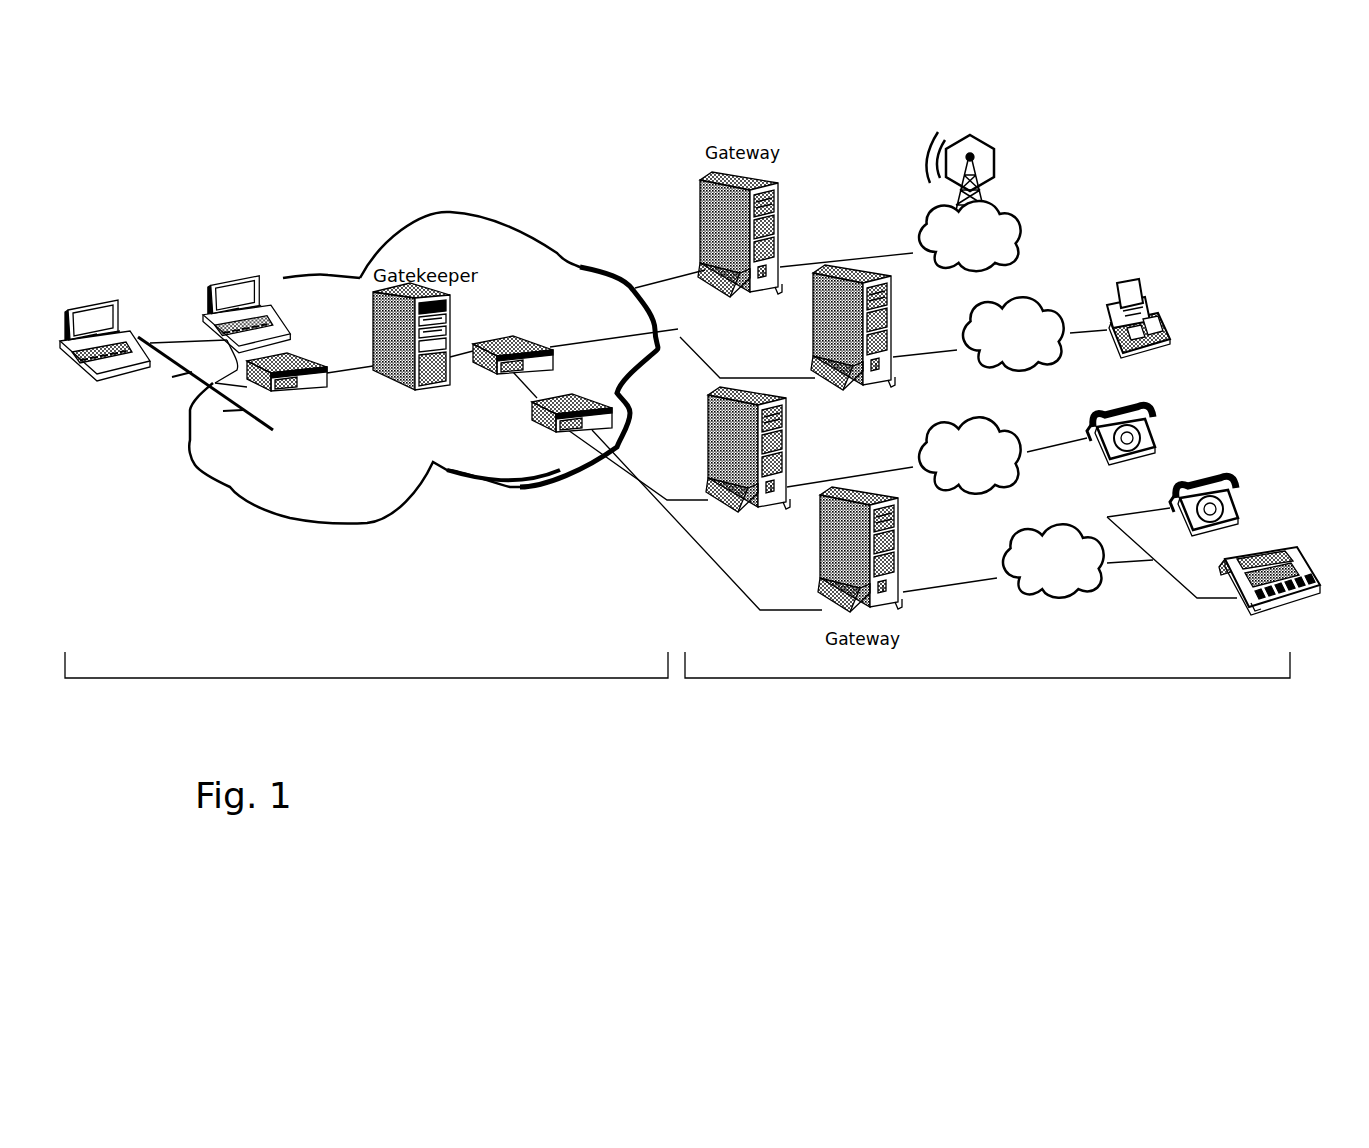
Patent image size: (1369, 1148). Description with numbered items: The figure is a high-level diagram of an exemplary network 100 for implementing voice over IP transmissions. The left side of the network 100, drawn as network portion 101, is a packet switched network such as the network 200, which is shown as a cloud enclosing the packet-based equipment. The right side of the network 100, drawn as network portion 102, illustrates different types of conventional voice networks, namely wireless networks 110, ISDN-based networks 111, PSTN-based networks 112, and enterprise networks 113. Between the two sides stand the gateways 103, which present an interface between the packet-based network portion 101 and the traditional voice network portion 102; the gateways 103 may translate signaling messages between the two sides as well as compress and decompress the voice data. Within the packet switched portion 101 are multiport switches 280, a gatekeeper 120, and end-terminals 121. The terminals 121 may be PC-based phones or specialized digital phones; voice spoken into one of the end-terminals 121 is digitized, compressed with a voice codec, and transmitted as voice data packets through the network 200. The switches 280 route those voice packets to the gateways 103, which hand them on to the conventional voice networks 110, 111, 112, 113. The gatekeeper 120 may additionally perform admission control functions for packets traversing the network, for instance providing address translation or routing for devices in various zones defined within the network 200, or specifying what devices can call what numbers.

The network 100 is at (659, 797).
The network portion 101 is at (366, 678).
The network portion 102 is at (987, 678).
The gateways 103 is at (783, 208).
The wireless networks 110 is at (1025, 210).
The ISDN-based networks 111 is at (1025, 292).
The PSTN-based networks 112 is at (1003, 420).
The enterprise networks 113 is at (1062, 514).
The gatekeeper 120 is at (400, 390).
The end-terminals 121 is at (115, 289).
The packet switched network 200 is at (530, 228).
The multiport switches 280 is at (313, 357).